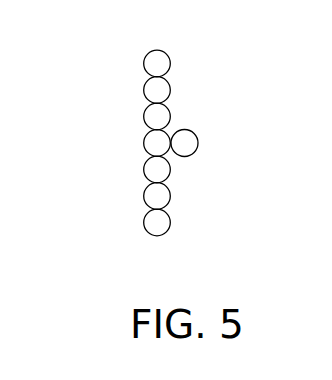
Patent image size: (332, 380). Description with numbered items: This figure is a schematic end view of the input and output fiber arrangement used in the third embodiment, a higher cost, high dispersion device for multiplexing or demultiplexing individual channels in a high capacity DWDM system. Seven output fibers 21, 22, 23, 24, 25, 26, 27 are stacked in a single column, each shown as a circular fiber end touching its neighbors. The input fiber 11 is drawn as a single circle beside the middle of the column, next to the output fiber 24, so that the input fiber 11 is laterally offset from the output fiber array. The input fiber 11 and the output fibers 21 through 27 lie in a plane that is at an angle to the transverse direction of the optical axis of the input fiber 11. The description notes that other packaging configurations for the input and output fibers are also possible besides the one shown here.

The input fiber 11 is at (199, 141).
The output fiber 21 is at (149, 61).
The output fiber 22 is at (146, 90).
The output fiber 23 is at (145, 117).
The output fiber 24 is at (142, 142).
The output fiber 25 is at (143, 170).
The output fiber 26 is at (143, 197).
The output fiber 27 is at (147, 226).